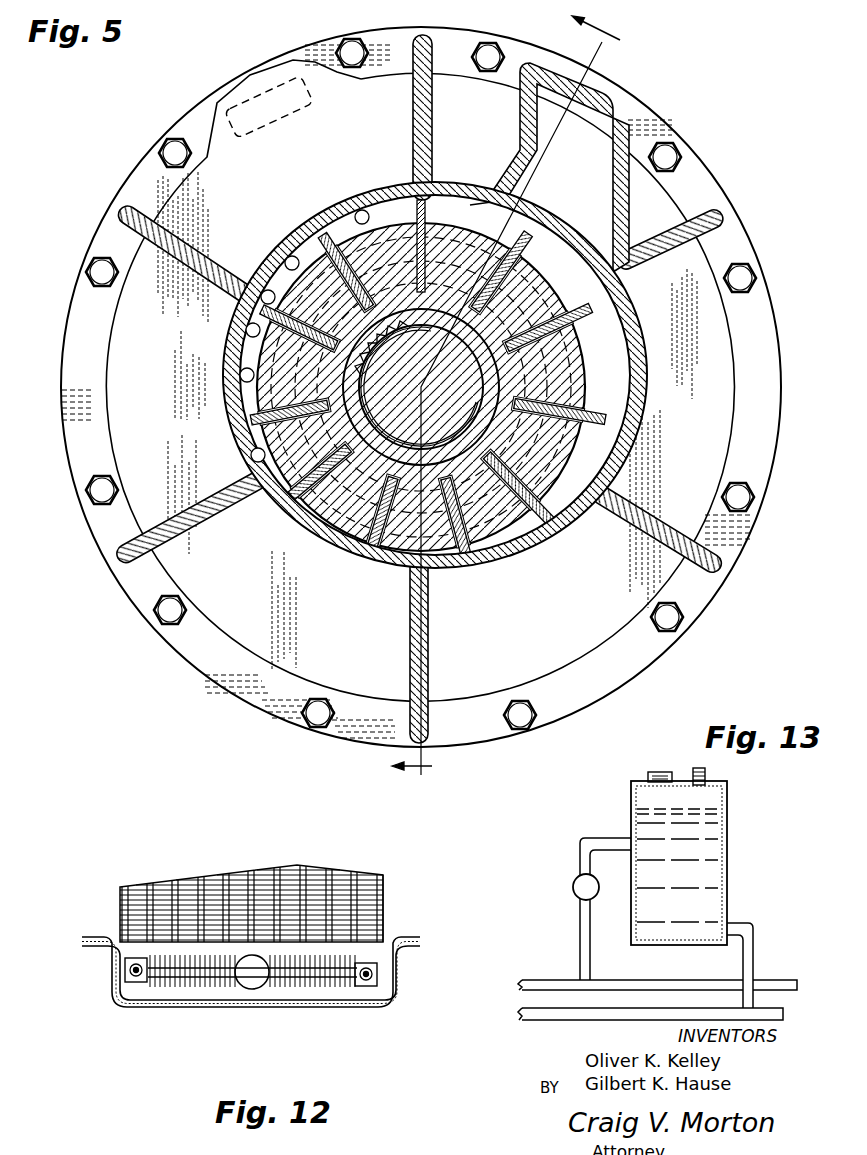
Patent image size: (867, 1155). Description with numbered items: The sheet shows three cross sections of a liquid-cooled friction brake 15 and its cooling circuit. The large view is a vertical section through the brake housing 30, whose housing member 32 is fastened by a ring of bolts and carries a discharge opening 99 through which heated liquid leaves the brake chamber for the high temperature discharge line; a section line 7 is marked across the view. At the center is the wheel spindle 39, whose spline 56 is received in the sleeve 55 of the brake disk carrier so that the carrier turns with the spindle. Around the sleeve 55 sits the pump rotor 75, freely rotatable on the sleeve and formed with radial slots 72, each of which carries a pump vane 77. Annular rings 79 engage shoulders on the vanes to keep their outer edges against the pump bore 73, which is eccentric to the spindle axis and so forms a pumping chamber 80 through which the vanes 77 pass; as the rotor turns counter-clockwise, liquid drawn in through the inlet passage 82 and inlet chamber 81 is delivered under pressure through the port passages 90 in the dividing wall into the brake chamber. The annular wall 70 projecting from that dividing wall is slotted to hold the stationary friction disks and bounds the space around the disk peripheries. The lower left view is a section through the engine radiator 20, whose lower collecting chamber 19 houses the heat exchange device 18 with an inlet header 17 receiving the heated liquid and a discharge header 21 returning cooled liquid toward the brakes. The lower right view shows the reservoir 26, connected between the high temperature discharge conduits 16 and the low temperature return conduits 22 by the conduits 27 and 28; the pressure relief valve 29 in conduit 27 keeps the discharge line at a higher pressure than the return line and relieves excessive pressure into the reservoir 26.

In FIG. 5, the section line 7- 7 is at (506, 404).
In FIG. 5, the friction brake 15 is at (157, 147).
In FIG. 5, the brake housing 30 is at (225, 647).
In FIG. 5, the brake housing member 32 is at (655, 573).
In FIG. 5, the discharge opening 99 is at (258, 107).
In FIG. 5, the inlet chamber 81 is at (630, 260).
In FIG. 5, the inlet passage 82 is at (592, 113).
In FIG. 5, the pumping chamber 80 is at (470, 206).
In FIG. 5, the pump rotor 75 is at (580, 386).
In FIG. 5, the pump chamber (pump bore) 73 is at (554, 268).
In FIG. 5, the radial slots 72 is at (320, 344).
In FIG. 5, the pump vanes 77 is at (262, 314).
In FIG. 5, the annular rings 79 is at (410, 250).
In FIG. 5, the annular wall 70 is at (357, 556).
In FIG. 5, the port passages 90 is at (362, 210).
In FIG. 5, the wheel spindle 39 is at (402, 330).
In FIG. 5, the sleeve 55 is at (483, 405).
In FIG. 5, the spline 56 is at (372, 351).
In FIG. 12, the engine radiator 20 is at (383, 910).
In FIG. 12, the lower collecting chamber 19 is at (352, 1008).
In FIG. 12, the heat exchange device 18 is at (298, 982).
In FIG. 12, the discharge header 21 is at (125, 965).
In FIG. 12, the inlet header 17 is at (378, 977).
In FIG. 13, the reservoir 26 is at (728, 842).
In FIG. 13, the conduit 27 is at (590, 836).
In FIG. 13, the pressure relief valve 29 is at (577, 878).
In FIG. 13, the conduits (high temperature discharge line) 16 is at (540, 978).
In FIG. 13, the conduit 28 is at (755, 935).
In FIG. 13, the conduits (low temperature return line) 22 is at (527, 1012).